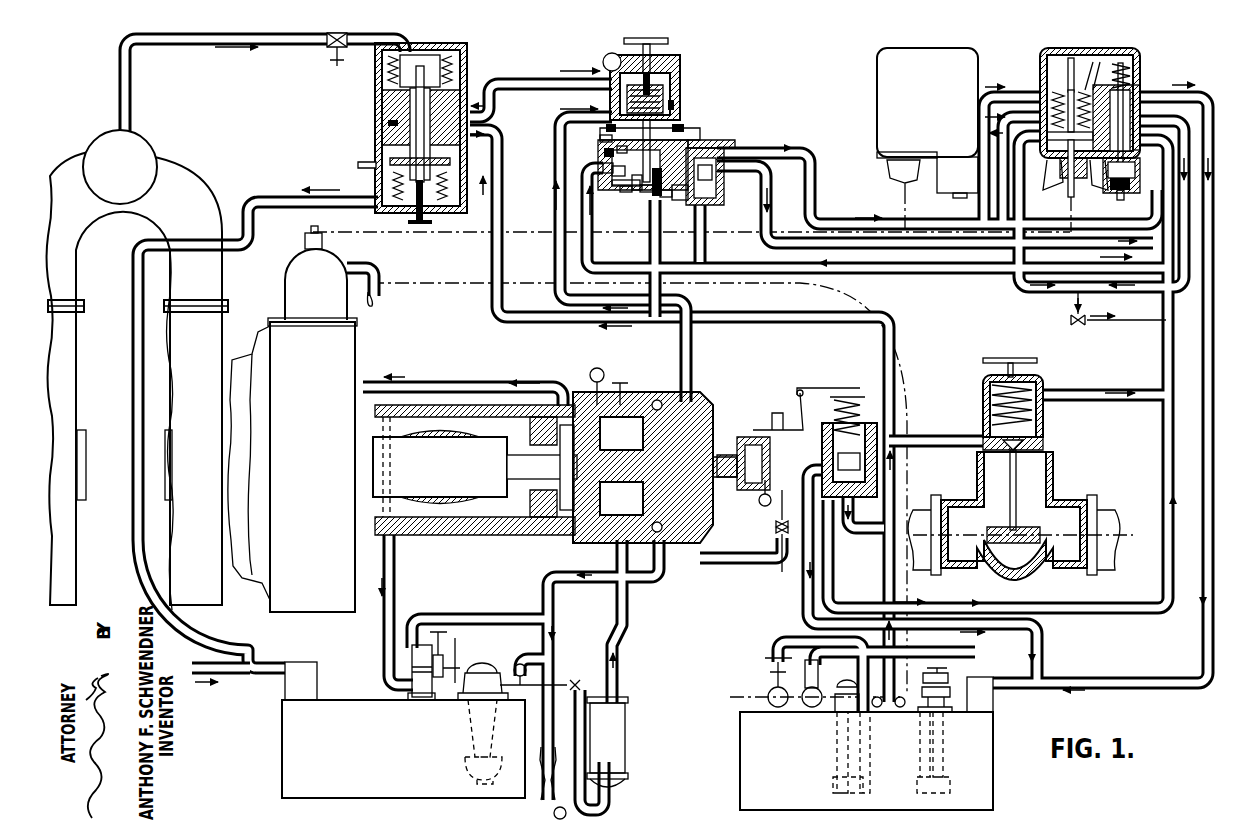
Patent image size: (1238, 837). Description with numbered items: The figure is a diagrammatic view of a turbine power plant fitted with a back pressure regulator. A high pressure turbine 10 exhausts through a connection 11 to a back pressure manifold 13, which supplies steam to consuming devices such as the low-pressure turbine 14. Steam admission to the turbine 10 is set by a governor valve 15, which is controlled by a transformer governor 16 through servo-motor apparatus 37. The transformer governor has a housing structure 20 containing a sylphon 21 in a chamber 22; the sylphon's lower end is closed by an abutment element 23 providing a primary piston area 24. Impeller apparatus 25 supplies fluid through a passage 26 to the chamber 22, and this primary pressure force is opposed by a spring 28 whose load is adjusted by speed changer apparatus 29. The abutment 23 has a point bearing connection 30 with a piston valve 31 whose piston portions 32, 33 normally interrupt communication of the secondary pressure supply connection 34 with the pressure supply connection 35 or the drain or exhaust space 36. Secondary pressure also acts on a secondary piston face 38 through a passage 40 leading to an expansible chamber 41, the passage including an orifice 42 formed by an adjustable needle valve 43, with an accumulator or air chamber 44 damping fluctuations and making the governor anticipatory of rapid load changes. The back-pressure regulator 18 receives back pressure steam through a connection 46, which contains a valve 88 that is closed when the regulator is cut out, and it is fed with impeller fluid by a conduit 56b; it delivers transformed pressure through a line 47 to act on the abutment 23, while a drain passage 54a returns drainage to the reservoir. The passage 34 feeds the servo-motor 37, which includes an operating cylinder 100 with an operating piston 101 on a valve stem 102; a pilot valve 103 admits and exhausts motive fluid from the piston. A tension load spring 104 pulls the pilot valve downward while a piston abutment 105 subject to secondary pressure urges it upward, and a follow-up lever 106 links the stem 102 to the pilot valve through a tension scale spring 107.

The high pressure turbine 10 is at (308, 604).
The connection 11 is at (137, 370).
The back pressure manifold 13 is at (114, 198).
The low-pressure turbine 14 is at (72, 387).
The governor valve 15 is at (293, 278).
The transformer governor 16 is at (653, 128).
The back-pressure regulator 18 is at (343, 130).
The housing structure 20 is at (683, 112).
The sylphon 21 is at (610, 102).
The chamber 22 is at (600, 129).
The abutment element 23 is at (692, 126).
The primary piston area 24 is at (717, 144).
The impeller apparatus 25 is at (703, 393).
The passage 26 is at (558, 158).
The spring 28 is at (683, 83).
The speed changer apparatus 29 is at (678, 46).
The point bearing connection 30 is at (611, 151).
The piston valve 31 is at (633, 188).
The piston portion 32 is at (603, 154).
The piston portion 33 is at (623, 182).
The secondary pressure supply connection 34 is at (720, 176).
The pressure supply connection 35 is at (620, 172).
The drain or exhaust space 36 is at (600, 139).
The servo-motor apparatus 37 is at (1013, 85).
The secondary piston face 38 is at (643, 193).
The passage 40 is at (680, 201).
The expansible chamber 41 is at (627, 190).
The orifice 42 is at (657, 187).
The adjustable needle valve 43 is at (667, 197).
The accumulator or air chamber 44 is at (600, 168).
The connection 46 is at (124, 84).
The line 47 is at (533, 82).
The drain passage 54a is at (353, 198).
The conduit 56b is at (497, 208).
The valve 88 is at (334, 62).
The operating cylinder 100 is at (1097, 130).
The operating piston 101 is at (1047, 130).
The valve stem 102 is at (1068, 195).
The pilot valve 103 is at (1143, 97).
The tension load spring 104 is at (1110, 192).
The piston abutment 105 is at (1130, 173).
The follow-up lever 106 is at (1078, 73).
The tension scale spring 107 is at (1130, 78).